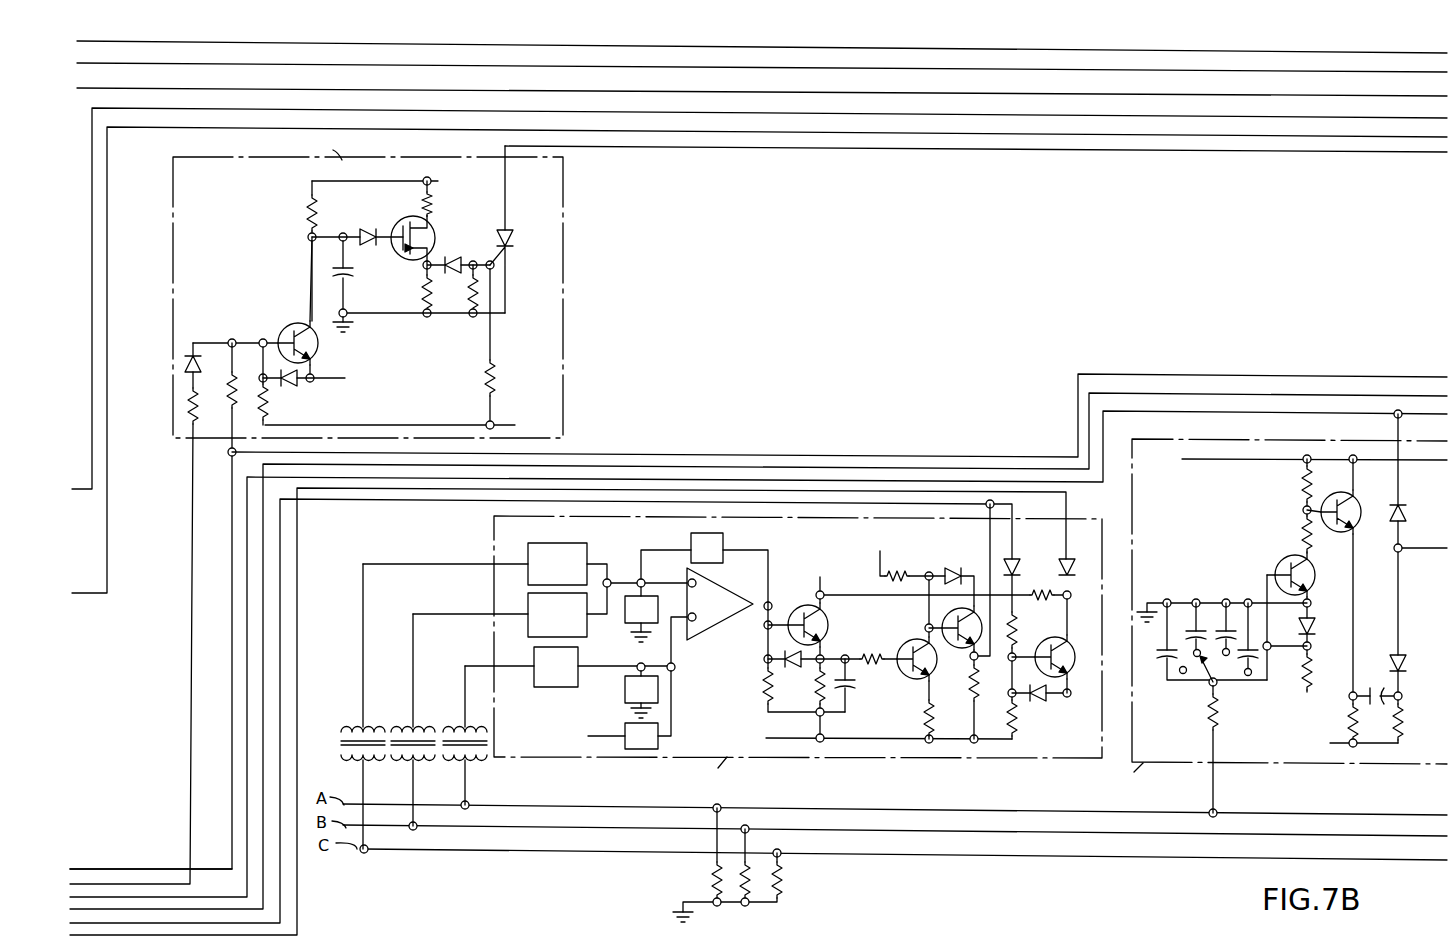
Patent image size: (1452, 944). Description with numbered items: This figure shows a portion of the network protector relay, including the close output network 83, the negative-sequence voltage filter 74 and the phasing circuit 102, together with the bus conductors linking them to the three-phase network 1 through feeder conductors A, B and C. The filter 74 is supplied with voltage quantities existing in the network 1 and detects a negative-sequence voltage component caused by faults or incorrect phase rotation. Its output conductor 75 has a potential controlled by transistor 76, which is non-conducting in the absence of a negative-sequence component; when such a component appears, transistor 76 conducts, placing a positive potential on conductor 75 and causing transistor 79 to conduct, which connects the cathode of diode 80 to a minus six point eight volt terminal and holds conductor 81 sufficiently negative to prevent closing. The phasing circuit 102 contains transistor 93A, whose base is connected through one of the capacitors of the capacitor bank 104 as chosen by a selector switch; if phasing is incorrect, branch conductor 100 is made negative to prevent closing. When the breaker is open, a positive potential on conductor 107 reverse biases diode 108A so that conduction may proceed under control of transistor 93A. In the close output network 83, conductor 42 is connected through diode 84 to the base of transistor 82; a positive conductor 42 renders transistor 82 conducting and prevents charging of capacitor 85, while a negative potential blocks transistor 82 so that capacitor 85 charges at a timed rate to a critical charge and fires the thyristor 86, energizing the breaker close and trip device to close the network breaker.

The close output network 83 is at (366, 160).
The thyristor 86 is at (512, 245).
The capacitor 85 is at (333, 272).
The conductor 81 is at (1058, 491).
The transistor 82 is at (290, 326).
The diode 84 is at (186, 352).
The branch conductor 100 is at (970, 458).
The conductor 107 is at (245, 506).
The conductor 42 is at (166, 880).
The output conductor 75 is at (341, 500).
The negative-sequence voltage filter 74 is at (732, 644).
The transistor 76 is at (948, 645).
The transistor 79 is at (1042, 640).
The diode 80 is at (1079, 575).
The phasing circuit 102 is at (1208, 762).
The transistor 93A is at (1277, 568).
The capacitor bank 104 is at (1213, 601).
The diode 108A is at (1402, 515).
The network 1 is at (965, 854).